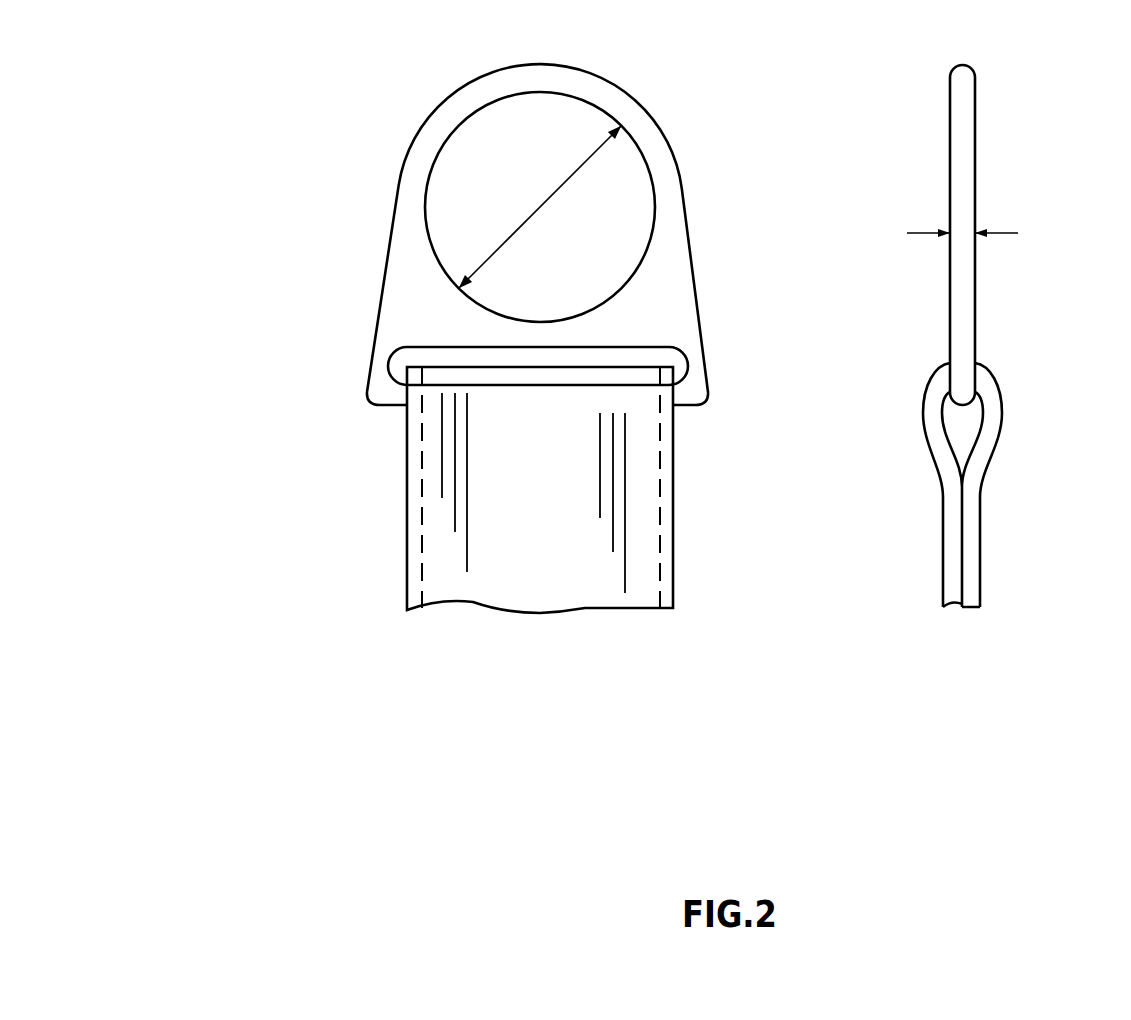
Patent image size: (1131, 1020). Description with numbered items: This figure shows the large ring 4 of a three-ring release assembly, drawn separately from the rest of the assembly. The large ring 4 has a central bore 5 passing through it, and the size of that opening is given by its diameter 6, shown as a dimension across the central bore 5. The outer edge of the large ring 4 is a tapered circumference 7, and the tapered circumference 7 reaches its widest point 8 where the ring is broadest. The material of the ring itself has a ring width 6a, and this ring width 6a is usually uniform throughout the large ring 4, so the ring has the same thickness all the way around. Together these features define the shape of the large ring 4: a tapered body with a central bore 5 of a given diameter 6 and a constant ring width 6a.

The large ring 4 is at (368, 422).
The central bore 5 is at (553, 138).
The diameter 6 is at (517, 225).
The ring width 6a is at (1020, 222).
The tapered circumference 7 is at (342, 327).
The widest point 8 is at (648, 312).